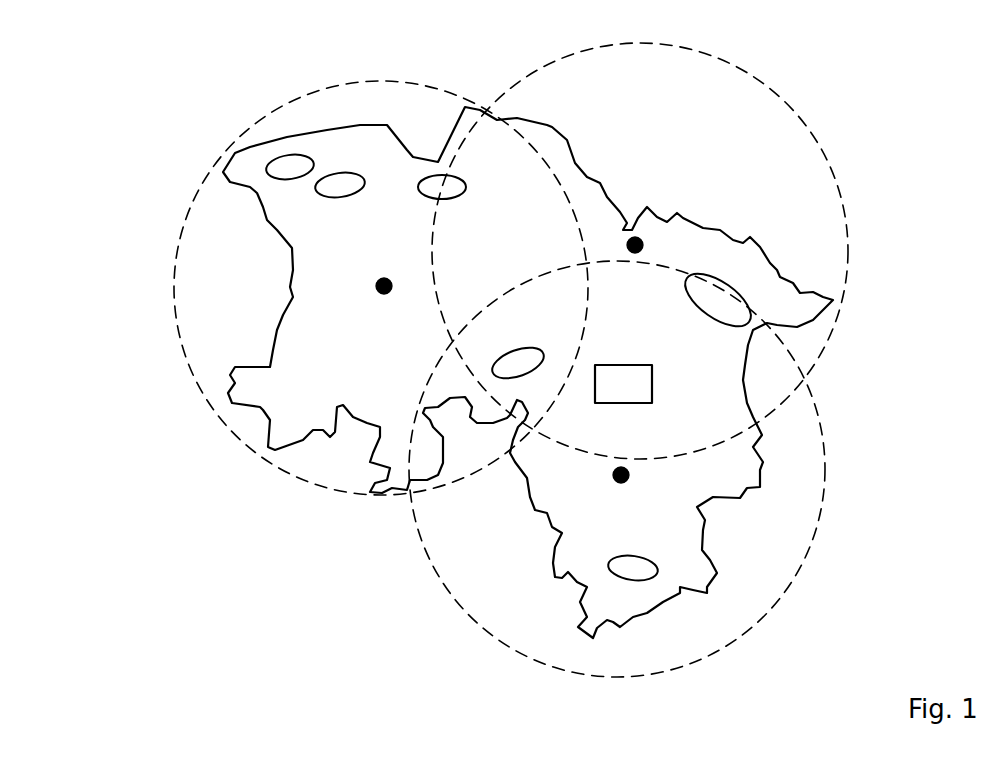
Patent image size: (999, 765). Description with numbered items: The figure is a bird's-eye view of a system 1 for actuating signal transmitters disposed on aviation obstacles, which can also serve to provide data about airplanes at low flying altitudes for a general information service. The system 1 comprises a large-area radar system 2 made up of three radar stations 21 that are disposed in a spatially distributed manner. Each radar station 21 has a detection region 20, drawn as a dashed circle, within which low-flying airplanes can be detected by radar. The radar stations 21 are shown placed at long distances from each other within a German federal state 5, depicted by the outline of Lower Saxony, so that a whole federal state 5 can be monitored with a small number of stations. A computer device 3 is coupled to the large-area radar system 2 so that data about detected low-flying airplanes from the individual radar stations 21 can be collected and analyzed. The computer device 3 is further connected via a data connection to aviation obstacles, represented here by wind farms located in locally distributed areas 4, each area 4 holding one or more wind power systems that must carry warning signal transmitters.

The system 1 is at (110, 207).
The large-area radar system 2 is at (597, 247).
The computer device 3 is at (652, 385).
The area 4 is at (290, 179).
The German federal state 5 is at (578, 155).
The detection region 20 is at (315, 93).
The radar station 21 is at (381, 296).